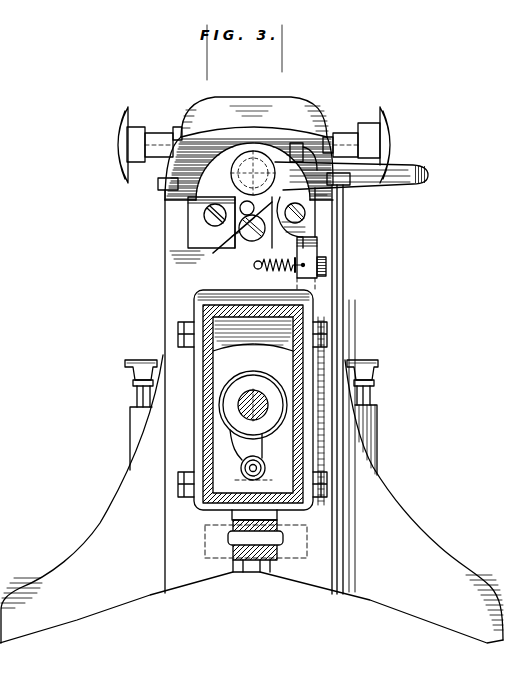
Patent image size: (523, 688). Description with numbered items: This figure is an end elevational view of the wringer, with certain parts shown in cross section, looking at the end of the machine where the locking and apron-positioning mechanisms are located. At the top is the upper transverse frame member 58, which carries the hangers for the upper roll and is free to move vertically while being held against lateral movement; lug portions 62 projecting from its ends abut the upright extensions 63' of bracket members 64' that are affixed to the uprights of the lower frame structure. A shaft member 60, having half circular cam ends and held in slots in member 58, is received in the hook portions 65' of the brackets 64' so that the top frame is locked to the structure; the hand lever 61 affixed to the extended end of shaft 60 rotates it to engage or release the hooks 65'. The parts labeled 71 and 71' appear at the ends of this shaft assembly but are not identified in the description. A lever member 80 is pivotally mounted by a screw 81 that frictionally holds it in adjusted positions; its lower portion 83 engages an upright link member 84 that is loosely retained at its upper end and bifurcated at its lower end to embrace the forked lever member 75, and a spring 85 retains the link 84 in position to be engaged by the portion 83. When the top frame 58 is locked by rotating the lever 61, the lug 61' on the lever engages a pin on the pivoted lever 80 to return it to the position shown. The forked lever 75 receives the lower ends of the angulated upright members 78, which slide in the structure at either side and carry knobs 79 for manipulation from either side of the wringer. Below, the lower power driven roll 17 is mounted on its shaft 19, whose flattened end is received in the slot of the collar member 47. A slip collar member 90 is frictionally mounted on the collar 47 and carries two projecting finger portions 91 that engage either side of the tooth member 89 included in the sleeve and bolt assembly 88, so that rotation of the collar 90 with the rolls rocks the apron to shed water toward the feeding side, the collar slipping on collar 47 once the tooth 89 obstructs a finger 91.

The upper transverse frame member 58 is at (305, 107).
The lug portions 62 is at (333, 137).
The shaft 71 is at (253, 126).
The knob 71' is at (250, 145).
The shaft member 60 is at (196, 192).
The hook portions 65' is at (251, 164).
The hand lever 61 is at (351, 190).
The lug 61' is at (226, 239).
The bracket members 64' is at (179, 222).
The lever member 80 is at (232, 178).
The screw 81 is at (226, 248).
The lower portion of lever 83 is at (300, 228).
The upright link member 84 is at (318, 250).
The spring 85 is at (275, 274).
The upright extensions 63' is at (342, 206).
The knobs 79 is at (133, 361).
The angulated upright members 78 is at (137, 392).
The slip collar member 90 is at (221, 384).
The lower wringer roll 17 is at (253, 400).
The collar member 47 is at (240, 402).
The shaft 19 is at (263, 415).
The projecting finger portions 91 is at (226, 430).
The tooth member 89 is at (240, 451).
The sleeve and bolt assembly 88 is at (245, 471).
The forked lever member 75 is at (256, 566).